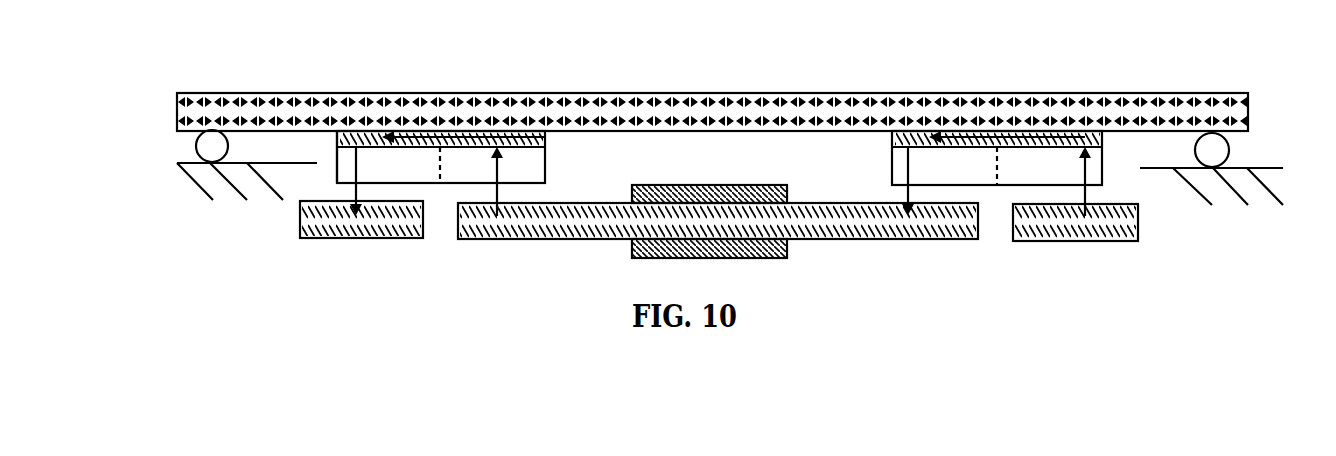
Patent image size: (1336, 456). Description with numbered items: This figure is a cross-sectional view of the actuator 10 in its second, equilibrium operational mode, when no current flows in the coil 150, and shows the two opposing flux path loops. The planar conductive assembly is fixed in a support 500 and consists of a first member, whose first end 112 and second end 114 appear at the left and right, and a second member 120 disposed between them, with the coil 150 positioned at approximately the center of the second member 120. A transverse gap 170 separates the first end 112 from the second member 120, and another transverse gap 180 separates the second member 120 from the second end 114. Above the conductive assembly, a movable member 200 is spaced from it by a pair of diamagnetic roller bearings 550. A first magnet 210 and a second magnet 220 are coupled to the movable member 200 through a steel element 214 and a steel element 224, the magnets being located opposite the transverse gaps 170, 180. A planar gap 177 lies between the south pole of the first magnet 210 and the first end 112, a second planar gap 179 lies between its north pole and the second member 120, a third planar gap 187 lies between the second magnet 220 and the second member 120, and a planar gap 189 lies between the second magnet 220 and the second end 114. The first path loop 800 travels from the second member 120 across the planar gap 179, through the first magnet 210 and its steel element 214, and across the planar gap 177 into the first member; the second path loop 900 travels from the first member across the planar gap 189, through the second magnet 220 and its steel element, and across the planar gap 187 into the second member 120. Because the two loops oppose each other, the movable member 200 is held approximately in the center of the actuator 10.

The actuator 10 is at (145, 66).
The movable member 200 is at (665, 103).
The diamagnetic roller bearings 550 is at (195, 145).
The support 500 is at (233, 198).
The first magnet 210 is at (470, 109).
The steel element 214 is at (547, 137).
The planar gap 177 is at (334, 190).
The first path loop 800 is at (493, 158).
The second magnet 220 is at (1037, 105).
The steel element 224 is at (1090, 150).
The second path loop 900 is at (1100, 198).
The first end 112 is at (320, 233).
The second member 120 is at (813, 230).
The second planar gap 179 is at (535, 193).
The third planar gap 187 is at (887, 193).
The transverse gap 170 is at (440, 227).
The transverse gap 180 is at (992, 233).
The second end 114 is at (1027, 237).
The planar gap 189 is at (1107, 202).
The coil 150 is at (707, 197).